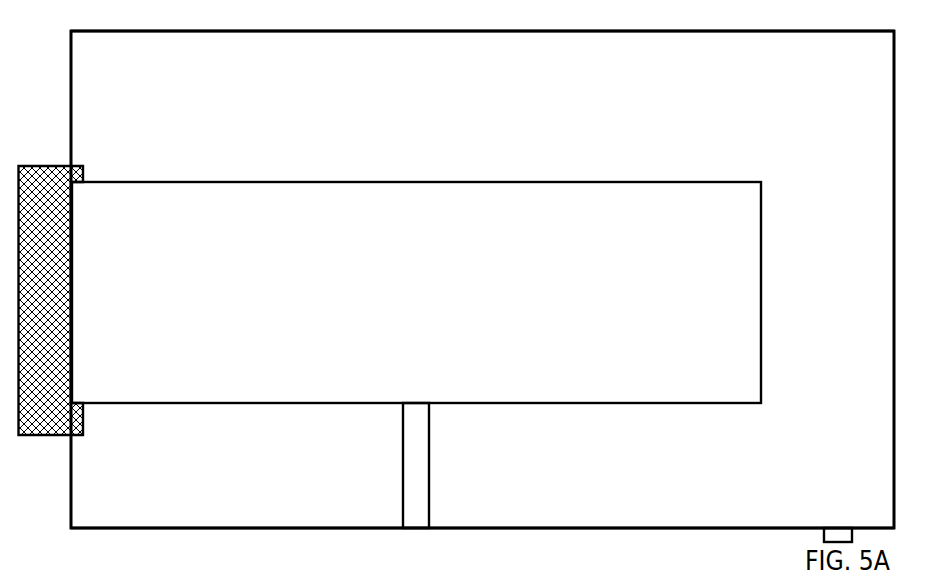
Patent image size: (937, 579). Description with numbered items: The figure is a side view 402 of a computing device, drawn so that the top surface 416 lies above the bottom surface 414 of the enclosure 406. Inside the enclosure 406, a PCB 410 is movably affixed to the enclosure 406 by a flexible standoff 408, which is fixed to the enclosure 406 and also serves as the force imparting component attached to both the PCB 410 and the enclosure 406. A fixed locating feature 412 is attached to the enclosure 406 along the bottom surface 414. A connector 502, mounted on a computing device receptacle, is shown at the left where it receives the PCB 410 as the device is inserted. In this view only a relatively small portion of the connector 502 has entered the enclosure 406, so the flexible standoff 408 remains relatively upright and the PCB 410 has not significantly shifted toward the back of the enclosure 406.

The Side View 402 is at (546, 541).
The enclosure 406 is at (540, 56).
The flexible standoff 408 is at (417, 411).
The PCB 410 is at (452, 304).
The fixed locating feature 412 is at (836, 514).
The bottom surface 414 is at (235, 522).
The top surface 416 is at (208, 22).
The connector 502 is at (50, 452).